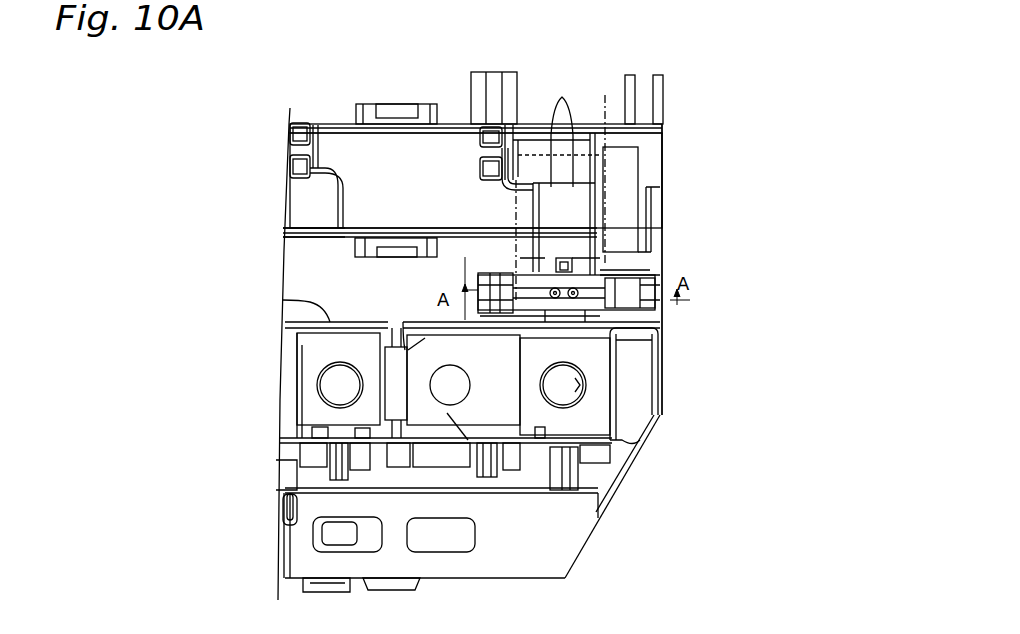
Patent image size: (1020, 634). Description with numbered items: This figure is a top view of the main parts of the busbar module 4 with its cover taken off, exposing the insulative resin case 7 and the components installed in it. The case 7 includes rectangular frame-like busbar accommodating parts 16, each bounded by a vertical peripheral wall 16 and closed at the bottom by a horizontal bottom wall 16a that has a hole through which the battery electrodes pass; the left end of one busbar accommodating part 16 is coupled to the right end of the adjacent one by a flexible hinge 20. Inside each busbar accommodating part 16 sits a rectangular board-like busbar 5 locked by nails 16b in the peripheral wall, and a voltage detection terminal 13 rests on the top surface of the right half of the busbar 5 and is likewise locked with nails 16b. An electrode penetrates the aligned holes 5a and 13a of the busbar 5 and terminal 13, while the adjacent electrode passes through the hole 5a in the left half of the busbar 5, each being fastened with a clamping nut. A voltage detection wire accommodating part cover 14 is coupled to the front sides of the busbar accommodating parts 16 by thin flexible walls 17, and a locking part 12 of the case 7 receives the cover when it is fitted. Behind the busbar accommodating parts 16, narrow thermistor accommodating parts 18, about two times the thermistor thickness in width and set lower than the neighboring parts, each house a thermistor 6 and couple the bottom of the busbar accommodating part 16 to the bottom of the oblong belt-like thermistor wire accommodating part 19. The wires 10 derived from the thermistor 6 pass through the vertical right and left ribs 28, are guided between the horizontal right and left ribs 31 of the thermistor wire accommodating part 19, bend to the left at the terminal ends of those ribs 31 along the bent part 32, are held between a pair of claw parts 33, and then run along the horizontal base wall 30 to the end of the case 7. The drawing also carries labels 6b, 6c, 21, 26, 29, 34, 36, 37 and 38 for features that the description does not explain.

The busbar module 4 is at (745, 65).
The busbar 5 is at (283, 397).
The hole 5a is at (462, 375).
The thermistor 6 is at (603, 268).
The nut 6b is at (612, 308).
The bolt 6c is at (598, 298).
The case 7 is at (670, 208).
The wires 10 is at (600, 320).
The locking part 12 is at (493, 465).
The terminal 13 is at (575, 420).
The hole 13a is at (578, 382).
The voltage detection wire accommodating part cover 14 is at (597, 540).
The busbar accommodating part 16 is at (428, 447).
The horizontal bottom wall 16a is at (417, 340).
The nails 16b is at (466, 432).
The thin flexible walls 17 is at (538, 480).
The thermistor accommodating part 18 is at (643, 271).
The thermistor wire accommodating part 19 is at (455, 124).
The flexible hinge 20 is at (385, 365).
The spacer 21 is at (470, 266).
The connector rail 26 is at (633, 296).
The vertical right and left ribs 28 is at (536, 243).
The partition wall 29 is at (343, 238).
The horizontal wall (base wall) 30 is at (408, 163).
The horizontal right and left ribs 31 is at (553, 130).
The bent part 32 is at (534, 185).
The claw parts 33 is at (488, 160).
The mounting boss 34 is at (406, 104).
The connector box 36 is at (595, 218).
The stud 37 is at (518, 135).
The pin 38 is at (615, 160).